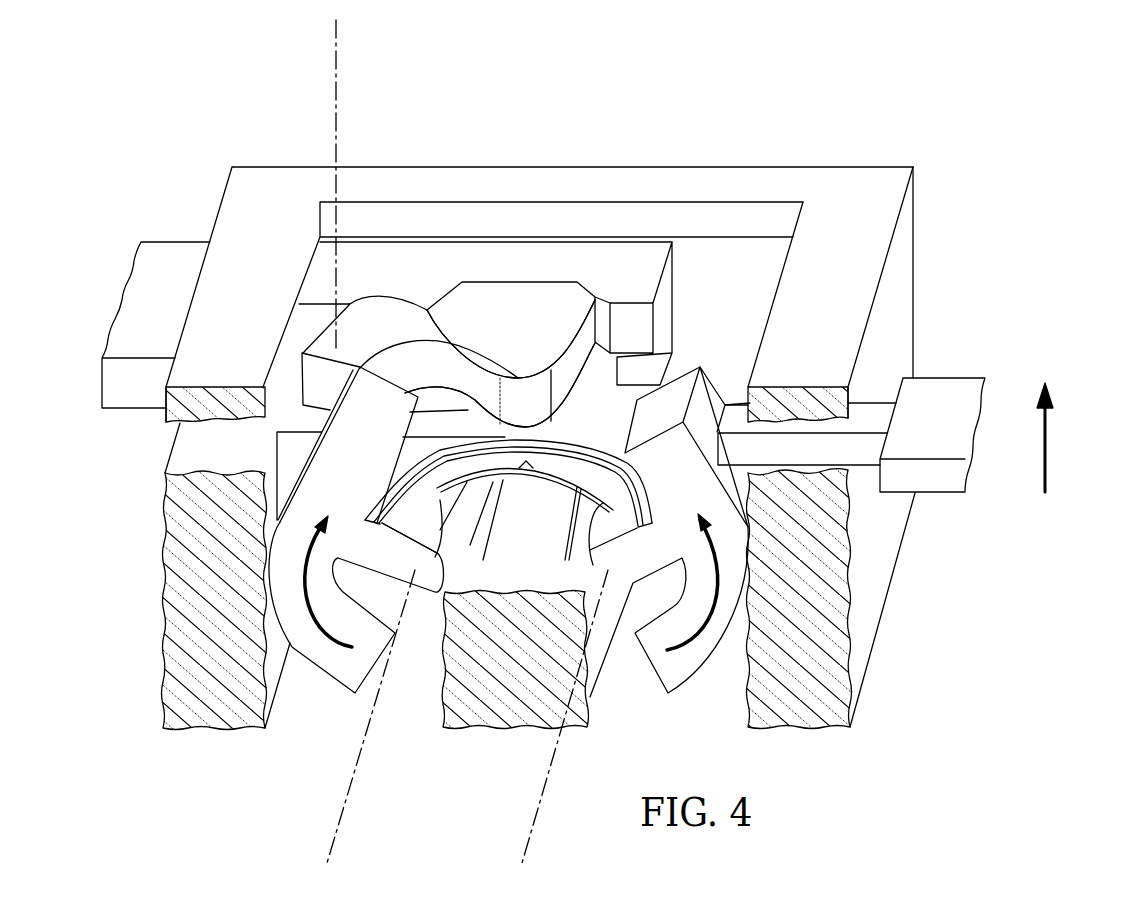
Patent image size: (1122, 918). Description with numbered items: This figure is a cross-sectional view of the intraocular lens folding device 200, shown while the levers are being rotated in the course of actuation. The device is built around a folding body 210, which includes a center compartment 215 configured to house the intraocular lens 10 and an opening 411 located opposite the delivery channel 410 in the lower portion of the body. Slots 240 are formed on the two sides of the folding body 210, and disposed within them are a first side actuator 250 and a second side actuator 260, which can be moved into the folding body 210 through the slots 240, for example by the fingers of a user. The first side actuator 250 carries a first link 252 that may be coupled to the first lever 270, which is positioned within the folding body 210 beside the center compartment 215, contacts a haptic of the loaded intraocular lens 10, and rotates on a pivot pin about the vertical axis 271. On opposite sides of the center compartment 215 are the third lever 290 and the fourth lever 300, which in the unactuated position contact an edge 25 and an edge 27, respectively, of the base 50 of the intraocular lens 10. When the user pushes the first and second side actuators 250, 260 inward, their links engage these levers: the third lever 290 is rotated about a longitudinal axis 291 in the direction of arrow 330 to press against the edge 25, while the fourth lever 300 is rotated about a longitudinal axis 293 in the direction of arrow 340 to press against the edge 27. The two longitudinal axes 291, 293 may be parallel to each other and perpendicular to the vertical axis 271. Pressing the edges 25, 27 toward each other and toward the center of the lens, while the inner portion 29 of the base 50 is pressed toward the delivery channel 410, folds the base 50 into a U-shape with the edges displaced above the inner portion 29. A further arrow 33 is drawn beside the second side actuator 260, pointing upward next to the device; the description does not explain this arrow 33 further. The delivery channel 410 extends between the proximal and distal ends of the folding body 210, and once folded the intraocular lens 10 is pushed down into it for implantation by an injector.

The intraocular lens folding device 200 is at (721, 59).
The vertical axis 271 is at (333, 40).
The folding body 210 is at (622, 177).
The opening 411 is at (755, 202).
The first link 252 is at (483, 253).
The center compartment 215 is at (773, 287).
The first side actuator 250 is at (166, 236).
The first lever 270 is at (440, 303).
The intraocular lens 10 is at (470, 437).
The base 50 is at (500, 363).
The third lever 290 is at (385, 392).
The fourth lever 300 is at (683, 388).
The slots 240 is at (872, 386).
The inner portion 29 is at (560, 453).
The edge 25 is at (378, 503).
The edge 27 is at (643, 502).
The delivery channel 410 is at (498, 580).
The arrow 330 is at (340, 643).
The arrow 340 is at (682, 643).
The second side actuator 260 is at (942, 498).
The direction 33 is at (1047, 447).
The longitudinal axis 291 is at (332, 845).
The longitudinal axis 293 is at (525, 845).